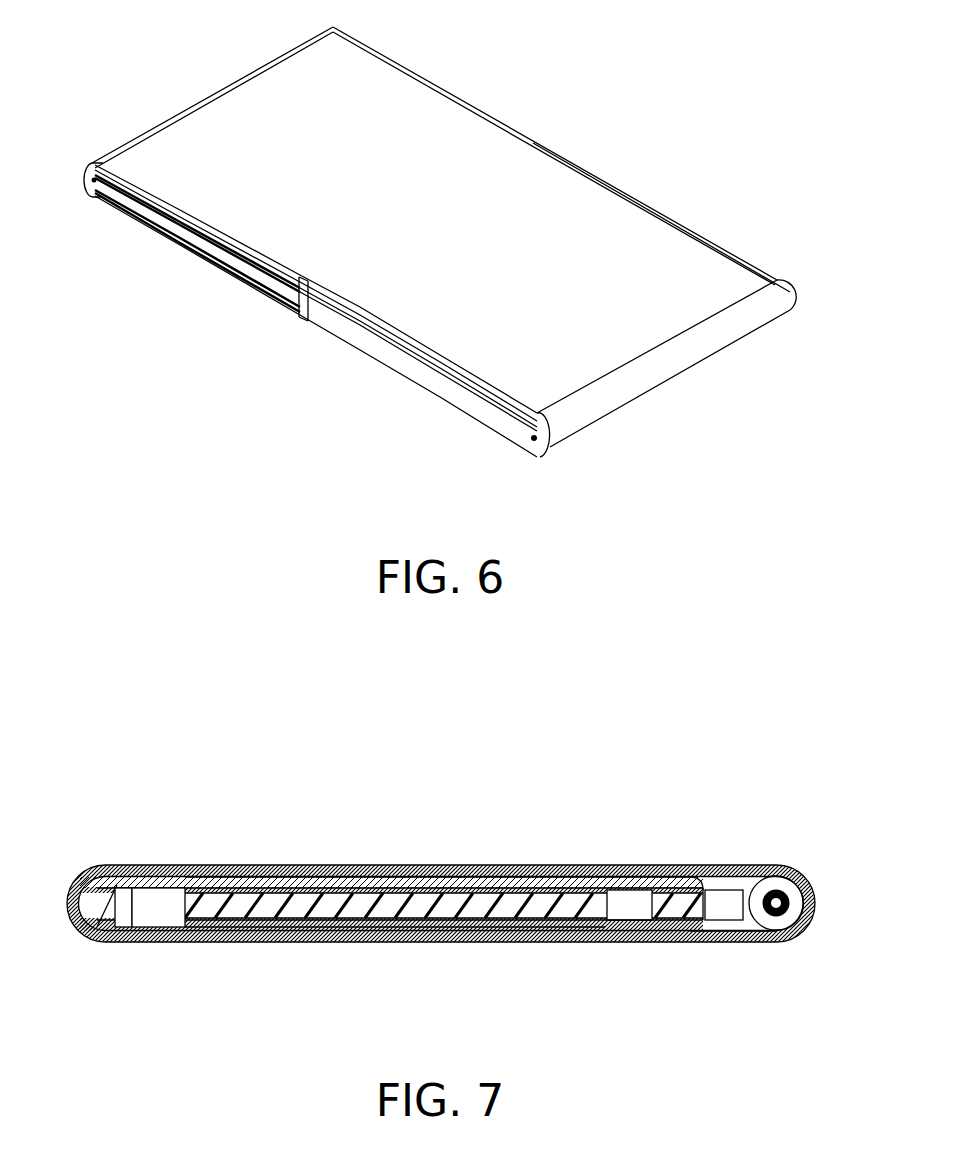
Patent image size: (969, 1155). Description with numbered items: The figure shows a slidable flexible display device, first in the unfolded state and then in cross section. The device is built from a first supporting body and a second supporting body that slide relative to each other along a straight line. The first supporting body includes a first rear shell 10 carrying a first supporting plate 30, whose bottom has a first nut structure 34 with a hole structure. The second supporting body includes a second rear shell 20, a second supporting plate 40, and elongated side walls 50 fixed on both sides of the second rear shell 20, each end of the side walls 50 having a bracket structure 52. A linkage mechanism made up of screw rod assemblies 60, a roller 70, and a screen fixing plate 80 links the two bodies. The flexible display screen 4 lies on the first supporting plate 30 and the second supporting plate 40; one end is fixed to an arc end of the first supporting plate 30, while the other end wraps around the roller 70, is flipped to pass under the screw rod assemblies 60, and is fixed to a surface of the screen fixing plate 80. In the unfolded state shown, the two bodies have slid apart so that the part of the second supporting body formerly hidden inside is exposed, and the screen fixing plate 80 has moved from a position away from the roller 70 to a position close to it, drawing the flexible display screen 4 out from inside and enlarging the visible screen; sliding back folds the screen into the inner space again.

In FIG. 6, the flexible display screen 4 is at (385, 143).
In FIG. 7, the flexible display screen 4 is at (712, 870).
In FIG. 6, the first rear shell 10 is at (398, 360).
In FIG. 7, the first rear shell 10 is at (157, 948).
In FIG. 6, the second rear shell 20 is at (90, 163).
In FIG. 7, the second rear shell 20 is at (808, 934).
In FIG. 7, the first supporting plate 30 is at (80, 940).
In FIG. 7, the first nut structure 34 is at (622, 906).
In FIG. 7, the second supporting plate 40 is at (742, 878).
In FIG. 6, the side walls 50 is at (142, 205).
In FIG. 7, the bracket structure 52 is at (160, 905).
In FIG. 7, the screw rod assemblies 60 is at (401, 905).
In FIG. 7, the roller 70 is at (735, 942).
In FIG. 7, the screen fixing plate 80 is at (250, 942).